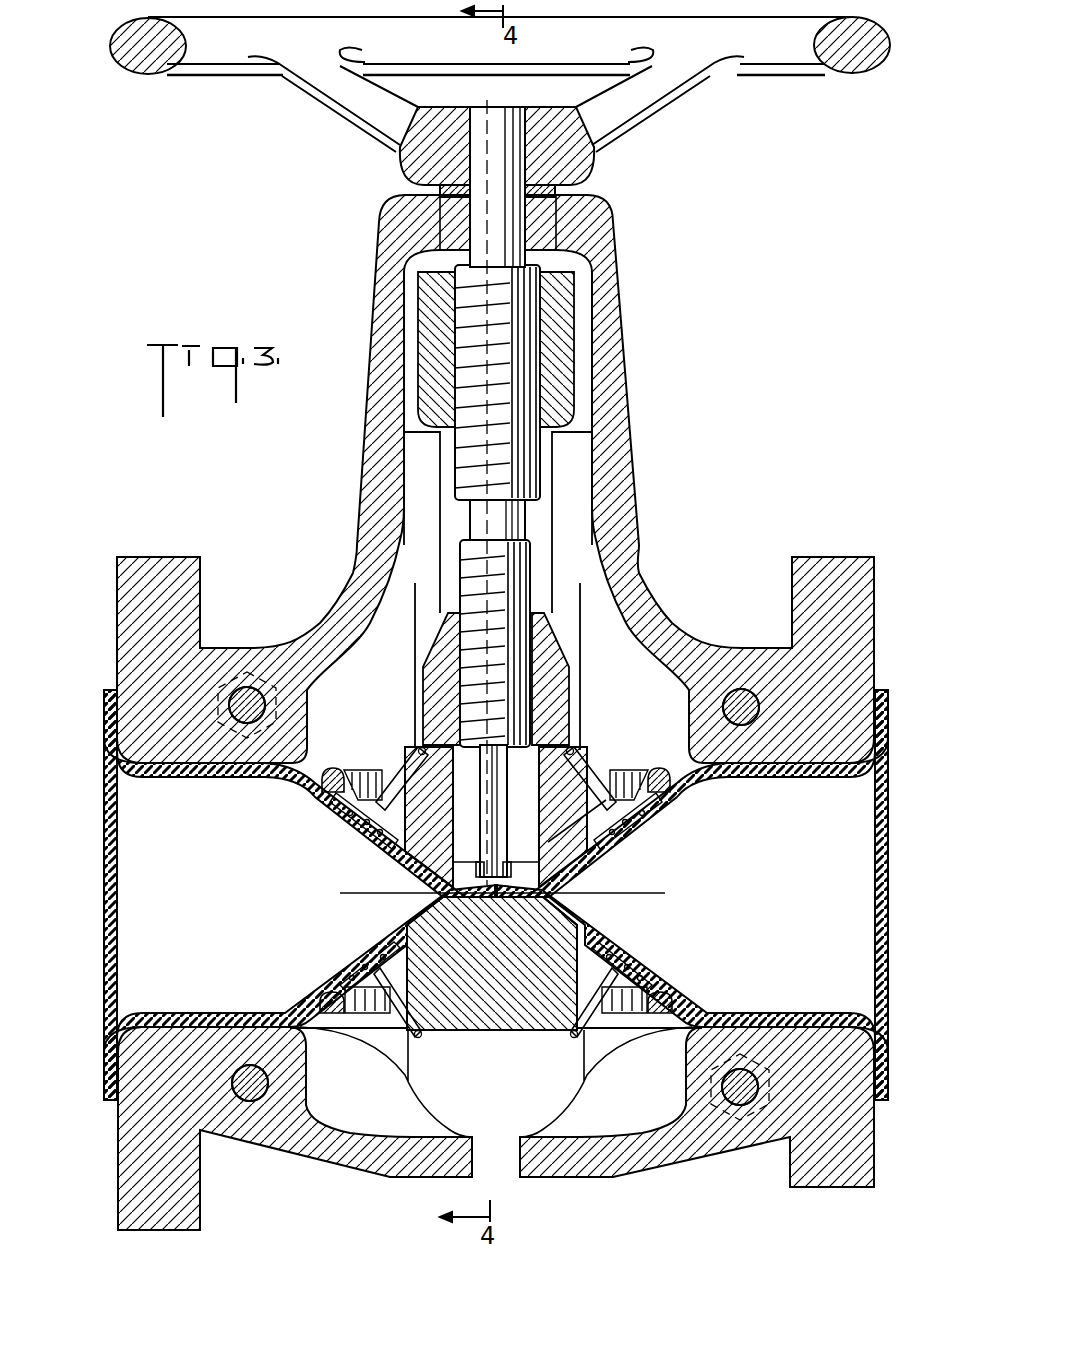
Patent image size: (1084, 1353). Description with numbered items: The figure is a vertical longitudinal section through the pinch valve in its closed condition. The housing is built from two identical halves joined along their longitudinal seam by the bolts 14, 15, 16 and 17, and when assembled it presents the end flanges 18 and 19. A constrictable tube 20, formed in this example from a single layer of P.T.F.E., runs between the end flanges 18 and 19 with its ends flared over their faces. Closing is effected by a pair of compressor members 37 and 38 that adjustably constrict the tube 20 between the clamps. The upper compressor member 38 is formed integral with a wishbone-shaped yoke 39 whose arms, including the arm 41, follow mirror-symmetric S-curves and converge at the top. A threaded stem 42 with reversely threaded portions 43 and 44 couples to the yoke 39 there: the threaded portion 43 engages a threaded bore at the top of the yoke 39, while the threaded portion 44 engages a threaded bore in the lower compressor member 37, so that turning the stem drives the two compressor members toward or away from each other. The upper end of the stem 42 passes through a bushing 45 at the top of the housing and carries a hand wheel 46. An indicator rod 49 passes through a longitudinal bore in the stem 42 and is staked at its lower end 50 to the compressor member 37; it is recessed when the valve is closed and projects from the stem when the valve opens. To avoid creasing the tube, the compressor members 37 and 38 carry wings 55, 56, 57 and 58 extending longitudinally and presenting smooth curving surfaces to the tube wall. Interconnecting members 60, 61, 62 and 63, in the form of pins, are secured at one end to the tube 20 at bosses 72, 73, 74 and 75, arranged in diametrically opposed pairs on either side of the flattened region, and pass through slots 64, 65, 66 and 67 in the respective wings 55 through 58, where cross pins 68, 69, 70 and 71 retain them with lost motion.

The bolt 14 is at (243, 695).
The bolt 15 is at (743, 692).
The bolt 16 is at (748, 1107).
The bolt 17 is at (245, 1103).
The end flange 18 is at (186, 557).
The end flange 19 is at (838, 560).
The constrictable tube 20 is at (128, 806).
The compressor member 37 is at (568, 848).
The compressor member 38 is at (490, 1000).
The yoke 39 is at (592, 353).
The arm 41 is at (545, 531).
The threaded stem 42 is at (527, 508).
The threaded portion 43 is at (538, 474).
The threaded portion 44 is at (530, 563).
The bushing 45 is at (530, 214).
The hand wheel 46 is at (767, 66).
The indicator rod 49 is at (494, 793).
The lower end of rod 50 is at (482, 864).
The wing 55 is at (657, 770).
The wing 56 is at (333, 770).
The wing 57 is at (662, 1012).
The wing 58 is at (330, 1015).
The interconnecting member 60 is at (595, 770).
The interconnecting member 61 is at (398, 768).
The interconnecting member 62 is at (594, 1020).
The interconnecting member 63 is at (396, 1014).
The slot 64 is at (627, 782).
The slot 65 is at (362, 768).
The slot 66 is at (630, 1012).
The slot 67 is at (367, 1014).
The cross pin 68 is at (574, 748).
The cross pin 69 is at (418, 746).
The cross pin 70 is at (570, 1040).
The cross pin 71 is at (423, 1040).
The boss 72 is at (657, 812).
The boss 73 is at (345, 829).
The boss 74 is at (622, 957).
The boss 75 is at (372, 955).